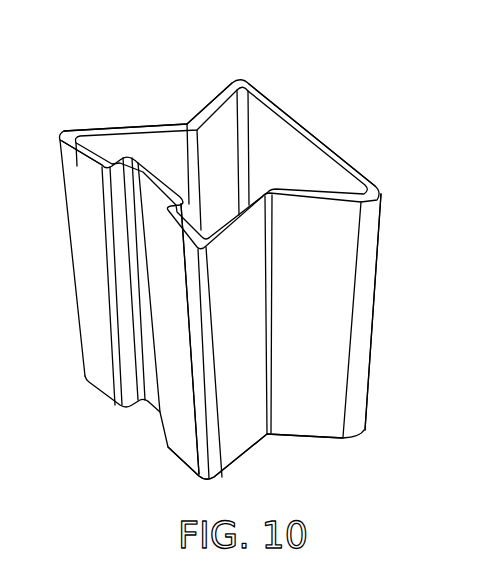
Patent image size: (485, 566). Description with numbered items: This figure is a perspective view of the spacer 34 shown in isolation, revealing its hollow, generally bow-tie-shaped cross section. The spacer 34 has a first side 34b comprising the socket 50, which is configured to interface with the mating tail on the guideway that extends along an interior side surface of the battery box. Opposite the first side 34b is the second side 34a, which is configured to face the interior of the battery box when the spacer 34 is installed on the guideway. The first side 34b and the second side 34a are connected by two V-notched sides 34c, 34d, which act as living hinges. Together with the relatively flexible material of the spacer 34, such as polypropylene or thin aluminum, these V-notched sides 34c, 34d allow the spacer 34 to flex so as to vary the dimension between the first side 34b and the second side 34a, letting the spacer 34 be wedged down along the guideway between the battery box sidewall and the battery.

The spacer 34 is at (284, 94).
The second side 34a is at (313, 138).
The first side 34b is at (180, 440).
The V-notched side 34c is at (317, 362).
The V-notched side 34d is at (138, 126).
The socket 50 is at (143, 193).